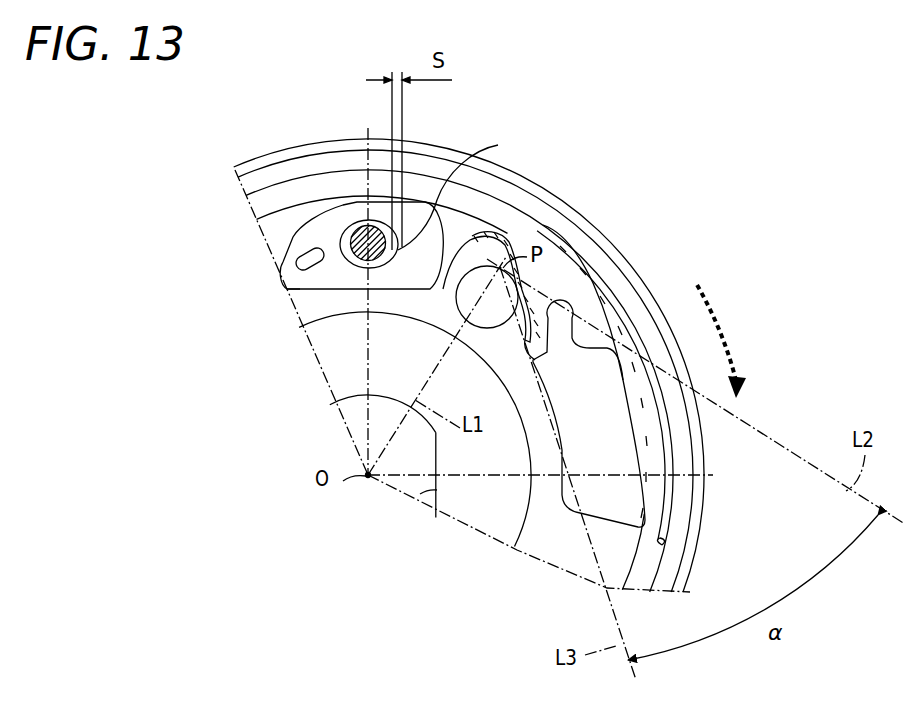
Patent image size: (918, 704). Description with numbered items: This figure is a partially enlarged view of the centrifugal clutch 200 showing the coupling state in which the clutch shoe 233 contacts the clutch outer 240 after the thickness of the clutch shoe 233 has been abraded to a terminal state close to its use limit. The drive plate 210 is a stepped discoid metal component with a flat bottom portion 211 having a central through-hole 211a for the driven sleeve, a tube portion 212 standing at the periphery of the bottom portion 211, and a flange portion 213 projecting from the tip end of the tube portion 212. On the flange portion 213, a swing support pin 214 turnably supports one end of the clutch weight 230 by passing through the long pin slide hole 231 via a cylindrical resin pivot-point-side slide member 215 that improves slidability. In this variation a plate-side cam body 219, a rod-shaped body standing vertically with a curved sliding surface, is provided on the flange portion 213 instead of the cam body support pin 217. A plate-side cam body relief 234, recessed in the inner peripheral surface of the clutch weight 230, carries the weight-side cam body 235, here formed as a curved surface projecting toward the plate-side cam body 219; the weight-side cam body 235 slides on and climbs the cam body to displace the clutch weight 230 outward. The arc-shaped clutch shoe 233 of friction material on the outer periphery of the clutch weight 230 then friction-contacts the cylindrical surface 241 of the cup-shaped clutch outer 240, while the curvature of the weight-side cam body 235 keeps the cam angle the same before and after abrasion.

The centrifugal clutch 200 is at (246, 118).
The drive plate 210 is at (258, 218).
The bottom portion 211 is at (476, 522).
The through-hole 211a is at (420, 494).
The tube portion 212 is at (300, 324).
The flange portion 213 is at (297, 292).
The swing support pin 214 is at (343, 240).
The pivot-point-side slide member 215 is at (468, 195).
The cam body support pin 217 is at (547, 221).
The plate-side cam body 219 is at (513, 322).
The clutch weight 230 is at (298, 238).
The pin slide hole 231 is at (387, 264).
The clutch shoe 233 is at (547, 222).
The plate-side cam body relief 234 is at (492, 238).
The weight-side cam body 235 is at (517, 283).
The clutch outer 240 is at (432, 148).
The cylindrical surface 241 is at (662, 545).